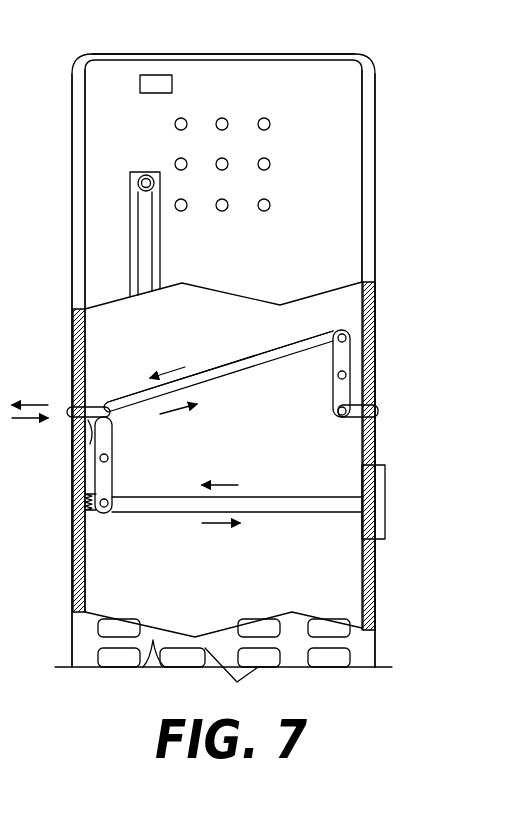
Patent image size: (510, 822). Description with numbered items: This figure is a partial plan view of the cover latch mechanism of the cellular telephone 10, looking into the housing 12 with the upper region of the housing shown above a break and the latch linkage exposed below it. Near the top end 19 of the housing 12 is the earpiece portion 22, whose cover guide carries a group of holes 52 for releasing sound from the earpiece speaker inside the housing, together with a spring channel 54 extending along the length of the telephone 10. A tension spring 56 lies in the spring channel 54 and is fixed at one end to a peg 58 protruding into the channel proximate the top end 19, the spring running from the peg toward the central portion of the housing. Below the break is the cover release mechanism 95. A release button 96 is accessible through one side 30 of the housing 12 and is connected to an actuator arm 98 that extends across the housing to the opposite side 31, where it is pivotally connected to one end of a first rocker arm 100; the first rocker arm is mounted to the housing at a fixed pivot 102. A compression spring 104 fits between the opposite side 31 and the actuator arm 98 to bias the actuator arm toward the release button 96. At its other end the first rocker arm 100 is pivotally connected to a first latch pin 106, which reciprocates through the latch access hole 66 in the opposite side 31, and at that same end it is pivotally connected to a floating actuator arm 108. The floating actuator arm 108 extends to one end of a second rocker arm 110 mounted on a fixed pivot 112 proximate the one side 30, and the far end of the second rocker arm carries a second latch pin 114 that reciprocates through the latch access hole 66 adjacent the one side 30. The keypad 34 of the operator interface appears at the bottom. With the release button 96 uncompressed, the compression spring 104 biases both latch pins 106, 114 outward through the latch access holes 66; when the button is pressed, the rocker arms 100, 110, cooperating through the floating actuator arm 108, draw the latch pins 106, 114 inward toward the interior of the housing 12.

The cellular telephone 10 is at (418, 133).
The housing 12 is at (378, 208).
The top end 19 is at (240, 54).
The earpiece portion 22 is at (72, 203).
The one side 30 is at (378, 583).
The opposite side 31 is at (72, 551).
The keypad 34 is at (153, 640).
The holes 52 is at (222, 118).
The spring channel 54 is at (143, 172).
The tension spring 56 is at (143, 252).
The peg 58 is at (138, 184).
The latch access holes 66 is at (68, 407).
The cover release mechanism 95 is at (288, 337).
The release button 96 is at (386, 498).
The actuator arm 98 is at (312, 496).
The first rocker arm 100 is at (115, 472).
The fixed pivot 102 is at (112, 456).
The compression spring 104 is at (90, 512).
The first latch pin 106 is at (72, 448).
The floating actuator arm 108 is at (236, 362).
The second rocker arm 110 is at (330, 358).
The fixed pivot 112 is at (337, 375).
The second latch pin 114 is at (358, 426).